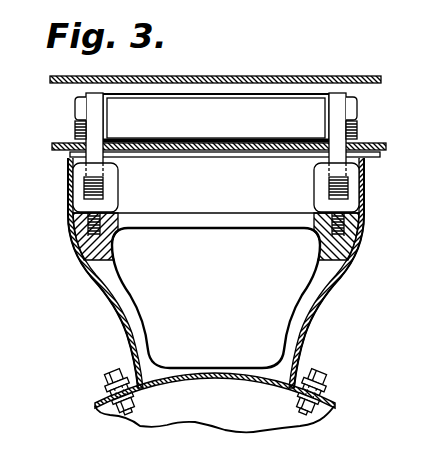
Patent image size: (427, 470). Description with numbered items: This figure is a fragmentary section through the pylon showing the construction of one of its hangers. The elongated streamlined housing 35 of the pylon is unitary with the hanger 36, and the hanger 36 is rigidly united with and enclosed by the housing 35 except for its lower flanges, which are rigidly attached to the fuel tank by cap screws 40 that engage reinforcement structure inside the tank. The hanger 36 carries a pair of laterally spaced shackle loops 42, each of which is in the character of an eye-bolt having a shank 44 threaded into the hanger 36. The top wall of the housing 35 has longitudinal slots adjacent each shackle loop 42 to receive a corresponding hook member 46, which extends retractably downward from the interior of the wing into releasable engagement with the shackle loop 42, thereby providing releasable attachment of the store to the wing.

The housing 35 is at (126, 308).
The hanger 36 is at (347, 268).
The cap screw 40 is at (317, 379).
The shackle loop 42 is at (78, 178).
The shank 44 is at (93, 250).
The hook member 46 is at (86, 146).